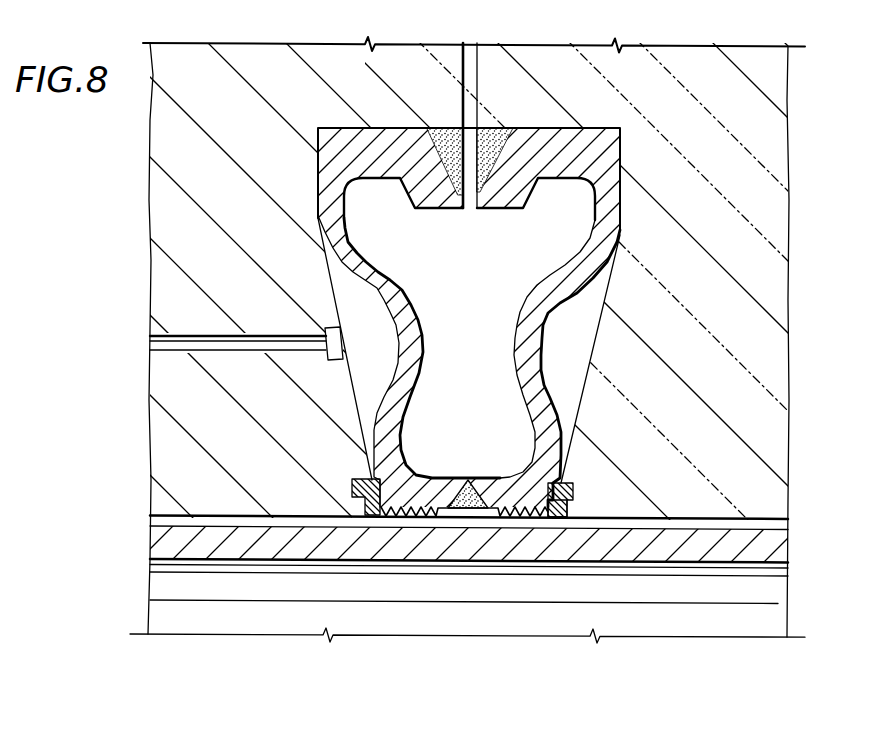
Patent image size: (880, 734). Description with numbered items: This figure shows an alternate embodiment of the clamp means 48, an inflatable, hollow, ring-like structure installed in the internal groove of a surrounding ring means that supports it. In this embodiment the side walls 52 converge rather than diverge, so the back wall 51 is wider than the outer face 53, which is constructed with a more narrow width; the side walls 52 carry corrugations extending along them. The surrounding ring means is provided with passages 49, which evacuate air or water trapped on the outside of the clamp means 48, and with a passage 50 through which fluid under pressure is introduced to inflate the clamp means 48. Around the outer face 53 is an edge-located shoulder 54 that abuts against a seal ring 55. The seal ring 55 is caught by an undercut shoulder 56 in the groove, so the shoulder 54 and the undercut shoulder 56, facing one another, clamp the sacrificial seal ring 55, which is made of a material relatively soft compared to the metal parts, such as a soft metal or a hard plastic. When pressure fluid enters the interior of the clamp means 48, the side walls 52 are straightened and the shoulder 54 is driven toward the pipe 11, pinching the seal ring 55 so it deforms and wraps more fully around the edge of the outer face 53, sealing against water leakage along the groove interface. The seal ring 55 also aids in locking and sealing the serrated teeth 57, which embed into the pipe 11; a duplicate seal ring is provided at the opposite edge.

The pipe 11 is at (780, 545).
The clamp means 48 is at (549, 80).
The passages 49 is at (173, 333).
The passage 50 is at (462, 87).
The back wall 51 is at (592, 148).
The side walls 52 is at (543, 327).
The outer face 53 is at (497, 470).
The shoulder 54 is at (555, 470).
The seal ring 55 is at (573, 490).
The undercut shoulder 56 is at (569, 510).
The serrated teeth 57 is at (442, 514).